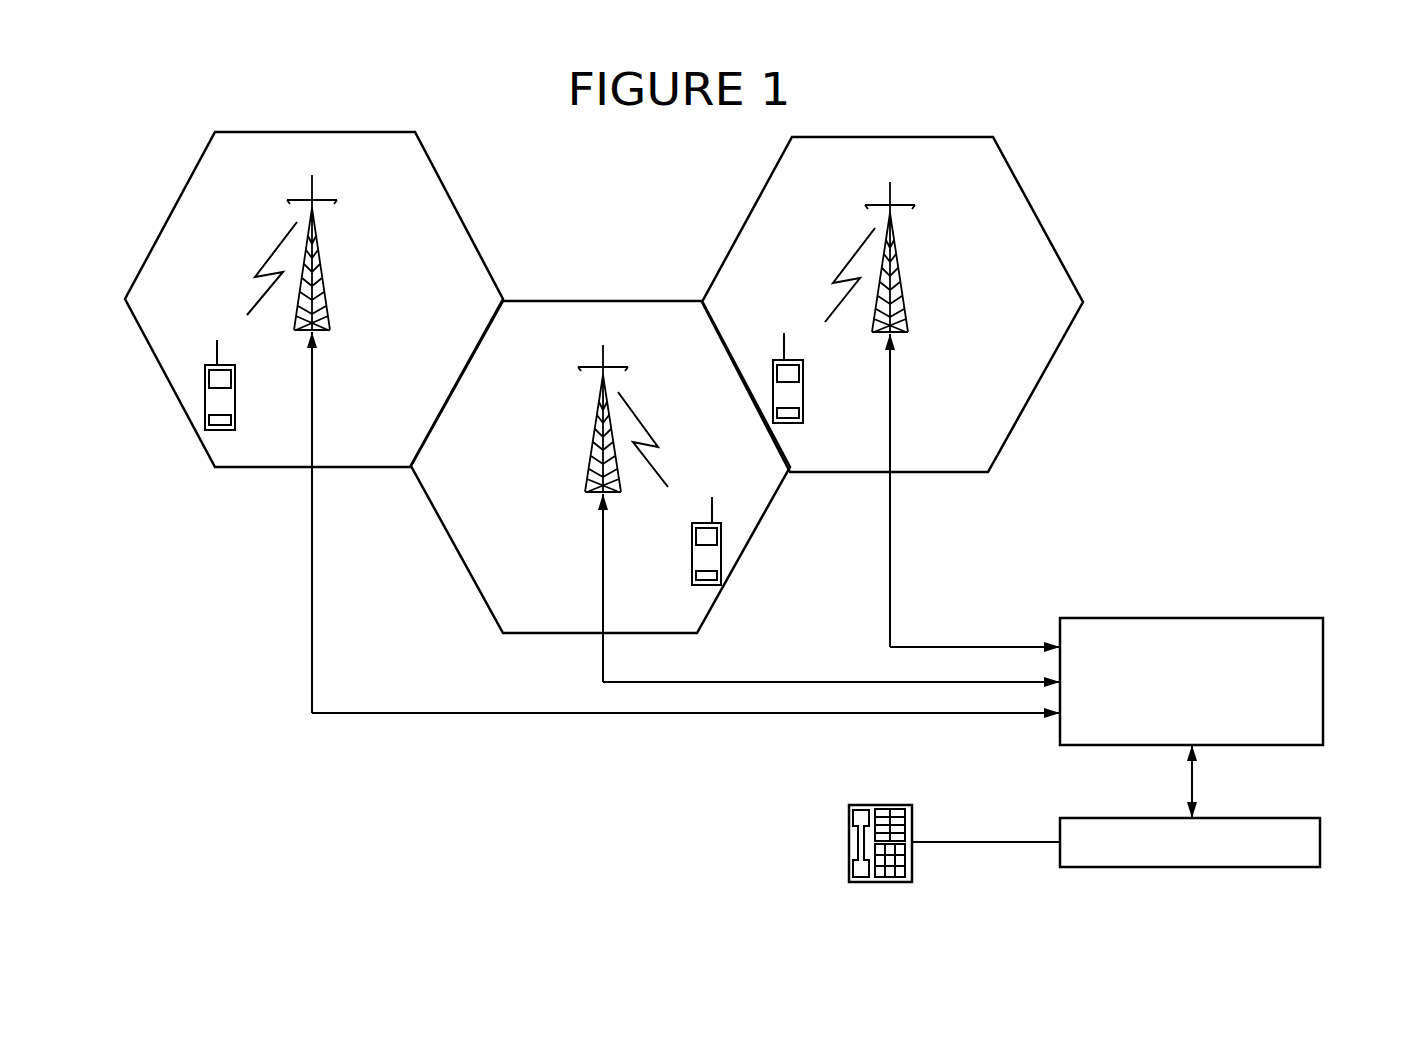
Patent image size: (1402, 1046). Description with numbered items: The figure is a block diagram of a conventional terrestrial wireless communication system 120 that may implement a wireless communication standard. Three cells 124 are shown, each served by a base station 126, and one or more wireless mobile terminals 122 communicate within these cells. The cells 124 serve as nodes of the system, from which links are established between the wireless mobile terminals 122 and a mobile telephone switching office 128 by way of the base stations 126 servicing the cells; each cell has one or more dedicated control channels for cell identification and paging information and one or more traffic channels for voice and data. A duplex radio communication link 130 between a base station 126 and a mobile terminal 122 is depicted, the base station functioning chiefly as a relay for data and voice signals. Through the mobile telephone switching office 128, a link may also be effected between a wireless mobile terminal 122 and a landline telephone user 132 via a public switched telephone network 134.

The terrestrial wireless communication system 120 is at (1177, 218).
The wireless mobile terminal 122 is at (235, 402).
The cell 124 is at (227, 452).
The base station 126 is at (337, 260).
The mobile telephone switching office 128 is at (1195, 618).
The duplex radio communication link 130 is at (248, 268).
The landline telephone user 132 is at (848, 830).
The public switched telephone network 134 is at (1320, 847).